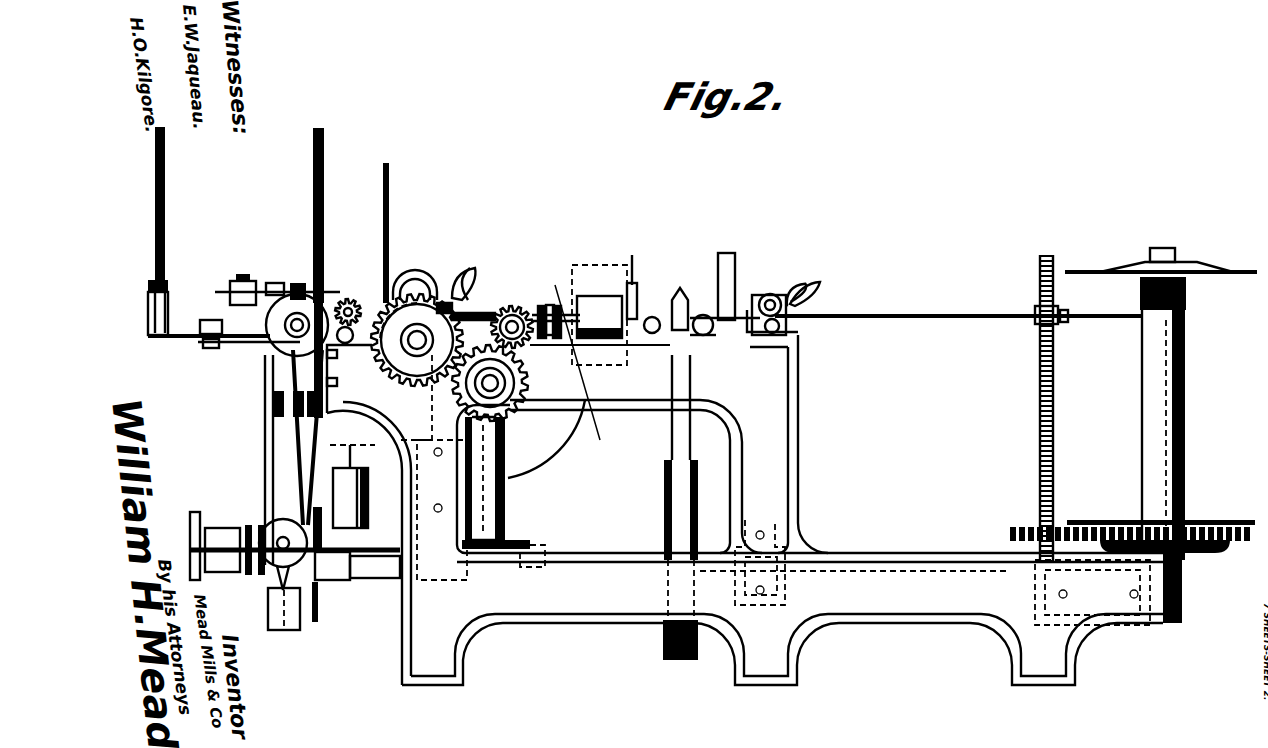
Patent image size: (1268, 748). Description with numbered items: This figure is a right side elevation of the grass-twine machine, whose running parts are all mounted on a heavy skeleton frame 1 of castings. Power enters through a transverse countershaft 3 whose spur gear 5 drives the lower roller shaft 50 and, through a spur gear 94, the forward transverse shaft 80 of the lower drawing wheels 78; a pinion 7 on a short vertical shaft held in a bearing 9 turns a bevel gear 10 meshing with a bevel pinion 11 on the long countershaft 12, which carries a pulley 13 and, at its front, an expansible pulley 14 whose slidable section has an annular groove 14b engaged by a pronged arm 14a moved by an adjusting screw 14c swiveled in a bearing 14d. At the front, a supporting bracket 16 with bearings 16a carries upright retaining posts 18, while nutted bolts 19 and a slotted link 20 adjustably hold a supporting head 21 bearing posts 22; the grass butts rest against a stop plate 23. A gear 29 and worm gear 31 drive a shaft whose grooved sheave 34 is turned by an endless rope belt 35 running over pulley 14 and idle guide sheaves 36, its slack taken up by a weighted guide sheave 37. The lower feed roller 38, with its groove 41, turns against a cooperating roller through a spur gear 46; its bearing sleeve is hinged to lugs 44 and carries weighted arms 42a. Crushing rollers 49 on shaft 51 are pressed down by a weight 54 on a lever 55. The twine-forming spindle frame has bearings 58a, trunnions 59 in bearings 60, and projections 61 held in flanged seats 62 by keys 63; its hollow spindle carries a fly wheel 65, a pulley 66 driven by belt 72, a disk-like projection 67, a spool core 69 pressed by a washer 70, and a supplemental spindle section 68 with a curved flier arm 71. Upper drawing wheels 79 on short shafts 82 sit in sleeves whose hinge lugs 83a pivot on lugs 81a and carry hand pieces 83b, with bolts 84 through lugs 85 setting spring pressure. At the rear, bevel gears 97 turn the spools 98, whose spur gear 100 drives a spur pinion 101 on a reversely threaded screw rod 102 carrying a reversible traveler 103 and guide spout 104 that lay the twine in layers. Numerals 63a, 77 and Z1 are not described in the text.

The skeleton frame 1 is at (800, 445).
The countershaft 3 is at (600, 362).
The spur gear 5 is at (522, 383).
The pinion 7 is at (506, 430).
The bearing 9 is at (506, 508).
The bevel gear 10 is at (530, 544).
The bevel pinion 11 is at (587, 531).
The long countershaft 12 is at (882, 553).
The pulley 13 is at (384, 300).
The expansible pulley 14 is at (268, 612).
The pronged arm 14a is at (252, 524).
The annular groove 14b is at (372, 552).
The adjusting screw 14c is at (211, 559).
The bearing 14d is at (221, 587).
The supporting bracket 16 is at (300, 352).
The bearings 16a is at (272, 283).
The upright retaining posts 18 is at (324, 151).
The nutted bolts 19 is at (205, 348).
The slotted link 20 is at (245, 343).
The supporting head 21 is at (148, 322).
The upright retaining posts 22 is at (155, 201).
The stop plate 23 is at (389, 184).
The gear 29 is at (310, 268).
The worm gear 31 is at (296, 280).
The grooved sheave 34 is at (270, 345).
The endless rope or cord belt 35 is at (330, 458).
The idle guide sheaves 36 is at (330, 430).
The weighted guide sheave 37 is at (266, 535).
The feed roller 38 is at (349, 379).
The groove 41 is at (318, 607).
The weighted arms 42a is at (225, 300).
The lugs 44 is at (364, 300).
The spur gear 46 is at (346, 301).
The crushing rollers 49 is at (420, 272).
The lower roller shaft 50 is at (388, 355).
The shaft 51 is at (398, 372).
The weight 54 is at (333, 500).
The lever 55 is at (362, 486).
The bearings 58a is at (687, 269).
The trunnions 59 is at (703, 336).
The bearings 60 is at (722, 340).
The trunnion-like projections 61 is at (650, 334).
The flanged seats 62 is at (640, 312).
The keys 63 is at (672, 335).
The casing 63a is at (599, 307).
The fly wheel 65 is at (732, 262).
The pulley 66 is at (680, 290).
The disk-like projection 67 is at (632, 255).
The supplemental spindle section 68 is at (588, 404).
The annular core of the spool 69 is at (599, 310).
The washer 70 is at (580, 318).
The curved arm 71 is at (416, 397).
The belt 72 is at (690, 441).
The link 77 is at (414, 423).
The lower drawing wheels 78 is at (796, 325).
The upper drawing wheels 79 is at (509, 298).
The transverse shafts 80 is at (782, 330).
The lugs 81a is at (493, 300).
The short shafts 82 is at (516, 300).
The hinge lugs 83a is at (504, 265).
The hand pieces 83b is at (858, 285).
The bolts 84 is at (762, 294).
The lugs 85 is at (757, 305).
The spur gear 94 is at (560, 326).
The bevel gears 97 is at (1198, 552).
The spools or windlass drums 98 is at (1186, 400).
The spur gear 100 is at (1085, 520).
The spur pinion 101 is at (1118, 508).
The reversely threaded screw rod 102 is at (1040, 405).
The automatically reversible traveler 103 is at (1036, 324).
The guide spout 104 is at (1066, 322).
The shaft Z1 is at (956, 318).